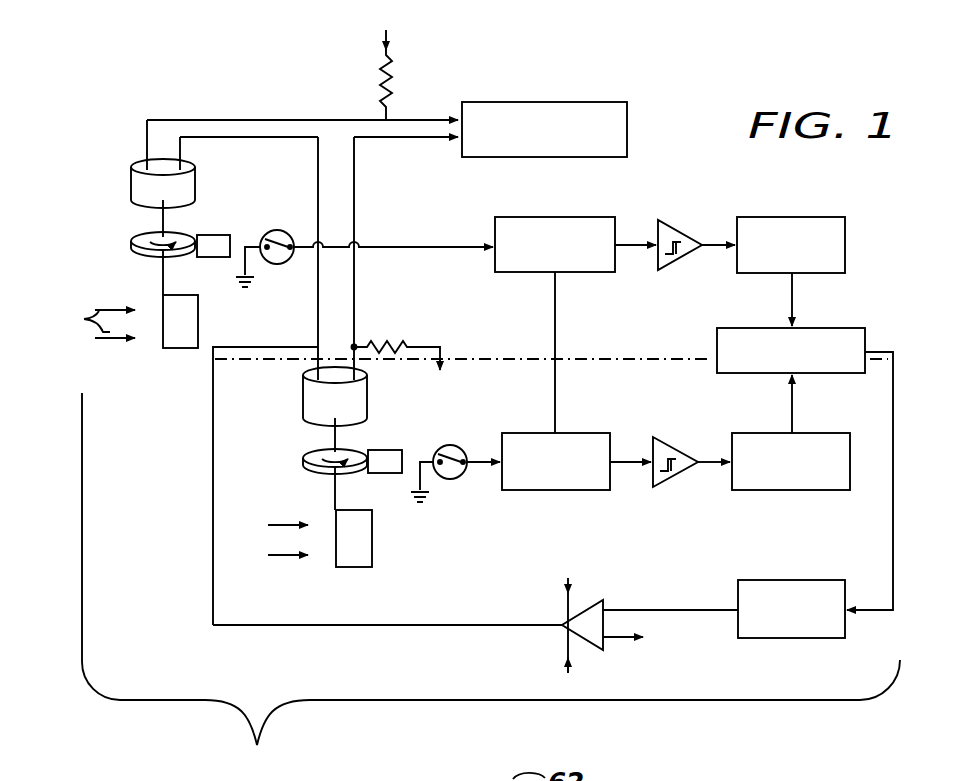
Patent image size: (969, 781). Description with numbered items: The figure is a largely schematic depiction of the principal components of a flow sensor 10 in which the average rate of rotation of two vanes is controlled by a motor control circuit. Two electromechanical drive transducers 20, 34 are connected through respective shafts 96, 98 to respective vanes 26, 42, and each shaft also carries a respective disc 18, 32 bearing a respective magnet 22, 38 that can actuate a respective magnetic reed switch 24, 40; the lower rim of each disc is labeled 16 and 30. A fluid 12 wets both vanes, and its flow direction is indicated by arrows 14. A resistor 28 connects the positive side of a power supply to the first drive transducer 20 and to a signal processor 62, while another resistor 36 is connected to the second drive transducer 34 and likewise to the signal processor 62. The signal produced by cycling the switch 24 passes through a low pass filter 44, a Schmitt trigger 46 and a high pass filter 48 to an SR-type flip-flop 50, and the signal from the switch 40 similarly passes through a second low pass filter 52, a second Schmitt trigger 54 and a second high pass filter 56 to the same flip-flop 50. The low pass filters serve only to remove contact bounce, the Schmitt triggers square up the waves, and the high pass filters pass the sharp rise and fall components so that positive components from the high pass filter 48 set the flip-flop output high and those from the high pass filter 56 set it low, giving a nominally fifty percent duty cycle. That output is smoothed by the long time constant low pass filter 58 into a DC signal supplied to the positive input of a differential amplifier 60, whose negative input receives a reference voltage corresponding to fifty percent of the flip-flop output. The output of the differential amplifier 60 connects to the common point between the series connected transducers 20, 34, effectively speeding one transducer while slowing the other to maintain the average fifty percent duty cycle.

The flow sensor 10 is at (491, 587).
The fluid 12 is at (165, 411).
The arrows 14 is at (176, 432).
The rotor disc 16 is at (135, 248).
The disc 18 is at (148, 237).
The electromechanical drive transducer 20 is at (198, 181).
The magnet 22 is at (218, 235).
The magnetic reed switch 24 is at (286, 265).
The vane 26 is at (180, 349).
The resistor 28 is at (382, 88).
The second rotor disc 30 is at (305, 459).
The disc 32 is at (312, 452).
The electromechanical drive transducer 34 is at (303, 392).
The resistor 36 is at (384, 346).
The magnet 38 is at (396, 450).
The magnetic reed switch 40 is at (461, 482).
The vane 42 is at (356, 567).
The low pass filter 44 is at (585, 272).
The Schmitt trigger 46 is at (698, 222).
The high pass filter 48 is at (822, 217).
The SR flip-flop 50 is at (717, 355).
The low pass filter 52 is at (590, 433).
The Schmitt trigger 54 is at (677, 437).
The high pass filter 56 is at (820, 433).
The low pass filter 58 is at (803, 580).
The differential amplifier 60 is at (604, 600).
The signal processor 62 is at (548, 158).
The shaft 96 is at (163, 213).
The shaft 98 is at (347, 430).